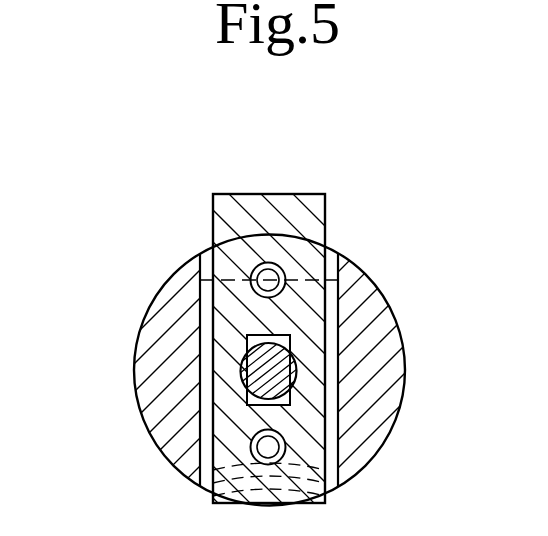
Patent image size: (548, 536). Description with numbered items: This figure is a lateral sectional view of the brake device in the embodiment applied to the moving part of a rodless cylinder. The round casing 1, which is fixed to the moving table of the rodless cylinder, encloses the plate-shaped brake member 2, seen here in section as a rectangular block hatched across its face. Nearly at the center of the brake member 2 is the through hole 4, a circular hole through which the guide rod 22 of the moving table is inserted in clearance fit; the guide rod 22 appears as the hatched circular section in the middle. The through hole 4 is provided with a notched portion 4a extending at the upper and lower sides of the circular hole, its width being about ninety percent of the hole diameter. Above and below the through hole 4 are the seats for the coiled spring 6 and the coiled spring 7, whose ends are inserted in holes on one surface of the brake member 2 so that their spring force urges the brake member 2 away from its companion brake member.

The casing 1 is at (357, 297).
The brake member 2 is at (299, 210).
The through hole 4 is at (297, 381).
The notched portion 4a is at (283, 340).
The coiled spring 6 is at (268, 263).
The coiled spring 7 is at (285, 448).
The guide rod 22 is at (263, 380).